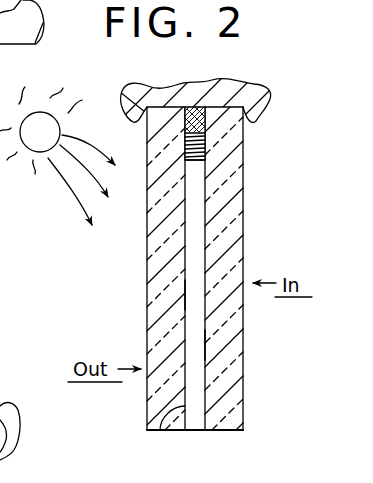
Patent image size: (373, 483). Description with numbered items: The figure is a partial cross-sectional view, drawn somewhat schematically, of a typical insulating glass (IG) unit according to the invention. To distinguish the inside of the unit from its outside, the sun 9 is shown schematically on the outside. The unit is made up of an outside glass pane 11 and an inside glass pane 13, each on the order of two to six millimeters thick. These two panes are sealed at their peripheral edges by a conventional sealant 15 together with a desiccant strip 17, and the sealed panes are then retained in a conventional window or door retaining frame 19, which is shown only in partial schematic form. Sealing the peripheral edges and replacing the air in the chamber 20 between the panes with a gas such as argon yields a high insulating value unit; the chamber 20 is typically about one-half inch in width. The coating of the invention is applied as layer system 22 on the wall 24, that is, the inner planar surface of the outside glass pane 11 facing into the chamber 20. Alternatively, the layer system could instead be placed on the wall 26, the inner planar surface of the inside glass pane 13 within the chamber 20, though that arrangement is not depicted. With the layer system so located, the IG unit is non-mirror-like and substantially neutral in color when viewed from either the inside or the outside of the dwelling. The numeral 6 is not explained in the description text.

The sun 9 is at (50, 143).
The outside glass pane 11 is at (150, 399).
The inside glass pane 13 is at (240, 374).
The sealant 15 is at (223, 93).
The desiccant strip 17 is at (206, 140).
The retaining frame 19 is at (157, 93).
The chamber 20 is at (196, 426).
The layer system 22 is at (188, 293).
The wall 24 is at (150, 430).
The wall 26 is at (205, 343).
The adjacent figure element 6 is at (6, 361).